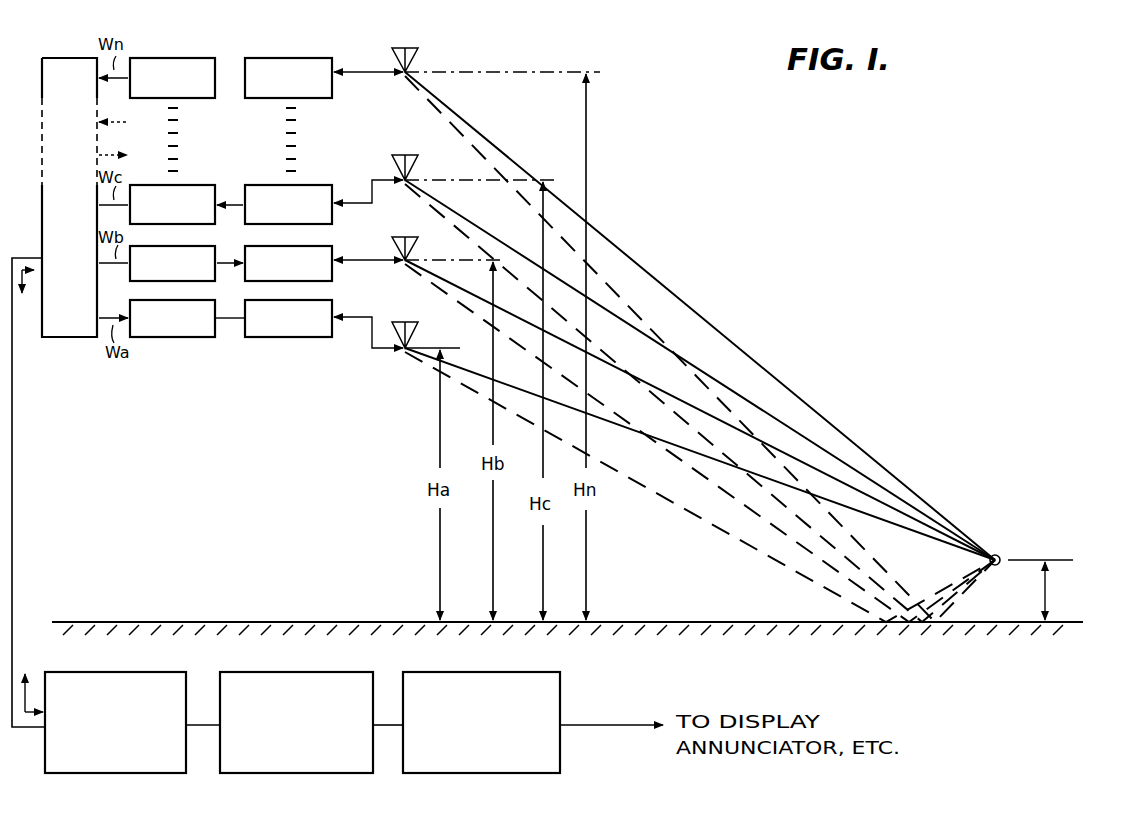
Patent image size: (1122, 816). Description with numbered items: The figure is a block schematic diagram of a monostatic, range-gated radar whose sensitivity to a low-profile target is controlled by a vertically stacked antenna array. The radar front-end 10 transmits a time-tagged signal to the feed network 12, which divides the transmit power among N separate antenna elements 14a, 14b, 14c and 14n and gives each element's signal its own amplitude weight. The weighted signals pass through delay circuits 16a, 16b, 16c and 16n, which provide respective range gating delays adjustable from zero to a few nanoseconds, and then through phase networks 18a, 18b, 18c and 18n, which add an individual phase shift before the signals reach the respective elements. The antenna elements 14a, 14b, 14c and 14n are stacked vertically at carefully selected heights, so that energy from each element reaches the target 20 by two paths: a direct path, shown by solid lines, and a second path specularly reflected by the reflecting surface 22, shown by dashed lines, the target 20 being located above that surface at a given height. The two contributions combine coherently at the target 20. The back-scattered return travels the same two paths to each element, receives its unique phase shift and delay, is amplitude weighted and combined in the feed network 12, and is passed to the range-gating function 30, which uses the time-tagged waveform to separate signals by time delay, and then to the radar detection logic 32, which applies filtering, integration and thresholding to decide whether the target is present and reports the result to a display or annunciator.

The radar front-end 10 is at (128, 670).
The feed network 12 is at (72, 58).
The antenna element 14a is at (420, 331).
The antenna element 14b is at (420, 243).
The antenna element 14c is at (420, 157).
The antenna element 14n is at (390, 48).
The delay circuit 16a is at (200, 325).
The delay circuit 16b is at (208, 268).
The delay circuit 16c is at (194, 190).
The delay circuit 16n is at (156, 56).
The phase network 18a is at (312, 330).
The phase network 18b is at (322, 268).
The phase network 18c is at (318, 192).
The phase network 18n is at (266, 58).
The target 20 is at (1052, 565).
The reflecting surface 22 is at (731, 622).
The range-gating function 30 is at (280, 672).
The radar detection logic 32 is at (451, 672).